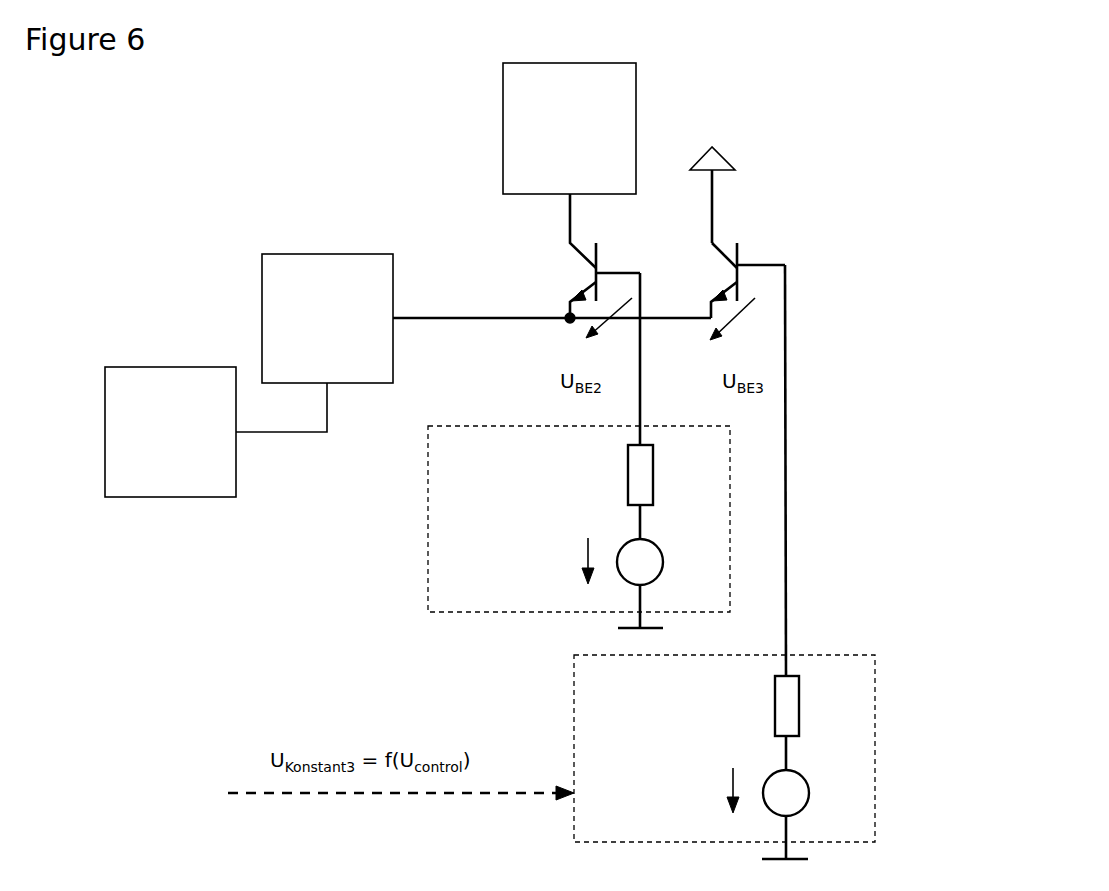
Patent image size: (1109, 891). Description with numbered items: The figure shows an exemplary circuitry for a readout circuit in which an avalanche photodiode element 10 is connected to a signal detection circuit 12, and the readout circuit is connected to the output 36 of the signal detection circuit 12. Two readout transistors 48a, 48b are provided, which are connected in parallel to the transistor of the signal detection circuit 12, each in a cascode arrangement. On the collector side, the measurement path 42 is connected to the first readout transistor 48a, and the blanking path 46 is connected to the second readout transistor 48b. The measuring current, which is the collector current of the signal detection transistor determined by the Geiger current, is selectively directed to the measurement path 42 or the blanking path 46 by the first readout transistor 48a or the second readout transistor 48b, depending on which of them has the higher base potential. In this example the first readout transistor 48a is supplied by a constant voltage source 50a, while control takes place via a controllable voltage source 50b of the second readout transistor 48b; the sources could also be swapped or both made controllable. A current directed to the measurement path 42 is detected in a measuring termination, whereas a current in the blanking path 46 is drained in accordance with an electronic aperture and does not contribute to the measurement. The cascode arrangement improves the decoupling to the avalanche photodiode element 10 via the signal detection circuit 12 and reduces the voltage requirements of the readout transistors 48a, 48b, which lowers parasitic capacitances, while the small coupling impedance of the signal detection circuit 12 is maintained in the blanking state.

The avalanche photodiode element 10 is at (147, 393).
The signal detection circuit 12 is at (318, 264).
The measurement path 42 is at (517, 102).
The blanking path 46 is at (723, 123).
The first readout transistor 48a is at (560, 262).
The second readout transistor 48b is at (757, 245).
The output of the signal detection circuit 36 is at (565, 325).
The constant voltage source 50a is at (428, 518).
The controllable voltage source 50b is at (833, 657).